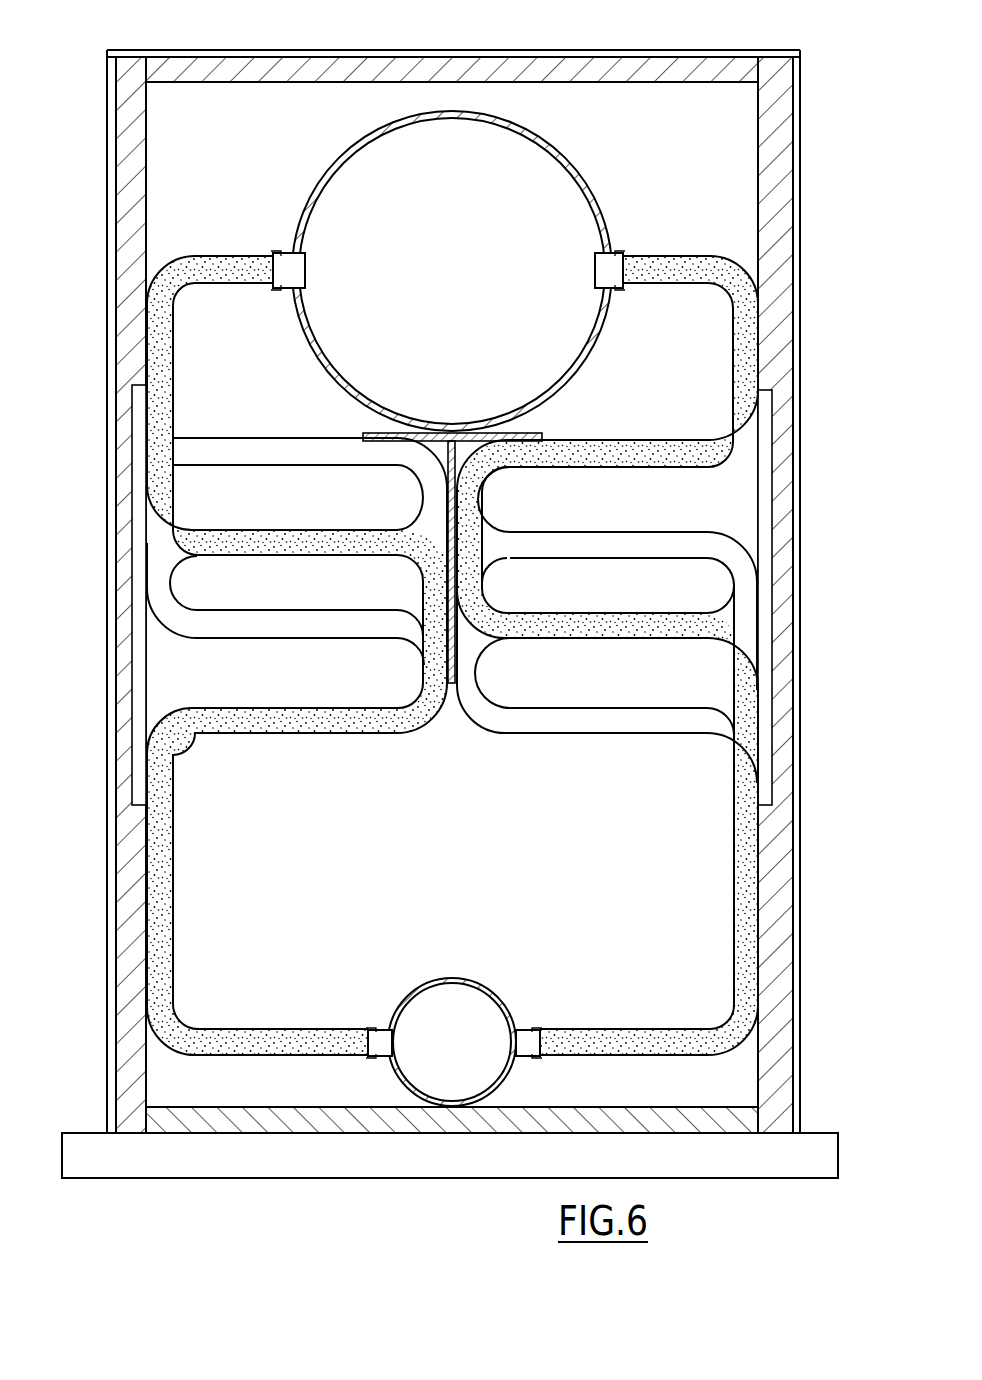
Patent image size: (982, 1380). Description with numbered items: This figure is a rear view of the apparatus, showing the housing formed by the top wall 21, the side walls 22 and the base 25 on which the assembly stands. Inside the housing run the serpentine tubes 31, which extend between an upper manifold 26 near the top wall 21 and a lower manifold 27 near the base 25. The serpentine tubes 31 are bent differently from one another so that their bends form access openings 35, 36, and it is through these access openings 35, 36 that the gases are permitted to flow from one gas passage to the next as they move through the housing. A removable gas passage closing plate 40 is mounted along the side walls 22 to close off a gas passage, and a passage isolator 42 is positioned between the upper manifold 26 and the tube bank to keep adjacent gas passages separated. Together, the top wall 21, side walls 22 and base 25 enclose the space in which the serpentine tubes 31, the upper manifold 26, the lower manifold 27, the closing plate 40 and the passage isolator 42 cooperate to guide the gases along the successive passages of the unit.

The top wall 21 is at (460, 50).
The side walls 22 is at (107, 663).
The base 25 is at (815, 1133).
The upper manifold 26 is at (570, 163).
The lower manifold 27 is at (497, 992).
The serpentine tubes 31 is at (632, 532).
The access opening 35 is at (232, 284).
The access opening 36 is at (666, 284).
The removable gas passage closing plate 40 is at (137, 540).
The passage isolator 42 is at (375, 432).